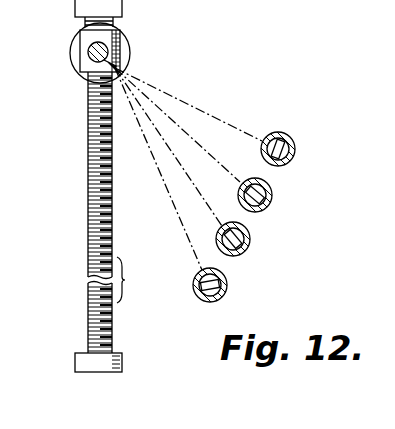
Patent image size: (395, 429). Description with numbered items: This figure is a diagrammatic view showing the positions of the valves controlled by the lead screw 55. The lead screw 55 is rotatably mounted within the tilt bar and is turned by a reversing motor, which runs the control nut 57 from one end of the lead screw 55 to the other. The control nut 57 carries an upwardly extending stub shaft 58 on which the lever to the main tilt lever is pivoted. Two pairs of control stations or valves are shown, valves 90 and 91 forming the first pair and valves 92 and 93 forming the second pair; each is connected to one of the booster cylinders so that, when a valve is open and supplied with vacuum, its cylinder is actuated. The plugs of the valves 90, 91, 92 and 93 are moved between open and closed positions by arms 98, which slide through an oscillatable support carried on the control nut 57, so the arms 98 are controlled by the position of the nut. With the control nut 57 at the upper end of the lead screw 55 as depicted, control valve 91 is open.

The lead screw 55 is at (88, 225).
The control nut 57 is at (88, 42).
The stub shaft 58 is at (100, 39).
The control valve 90 is at (227, 287).
The control valve 91 is at (272, 196).
The control valve 92 is at (250, 241).
The control valve 93 is at (295, 150).
The arms 98 is at (224, 122).